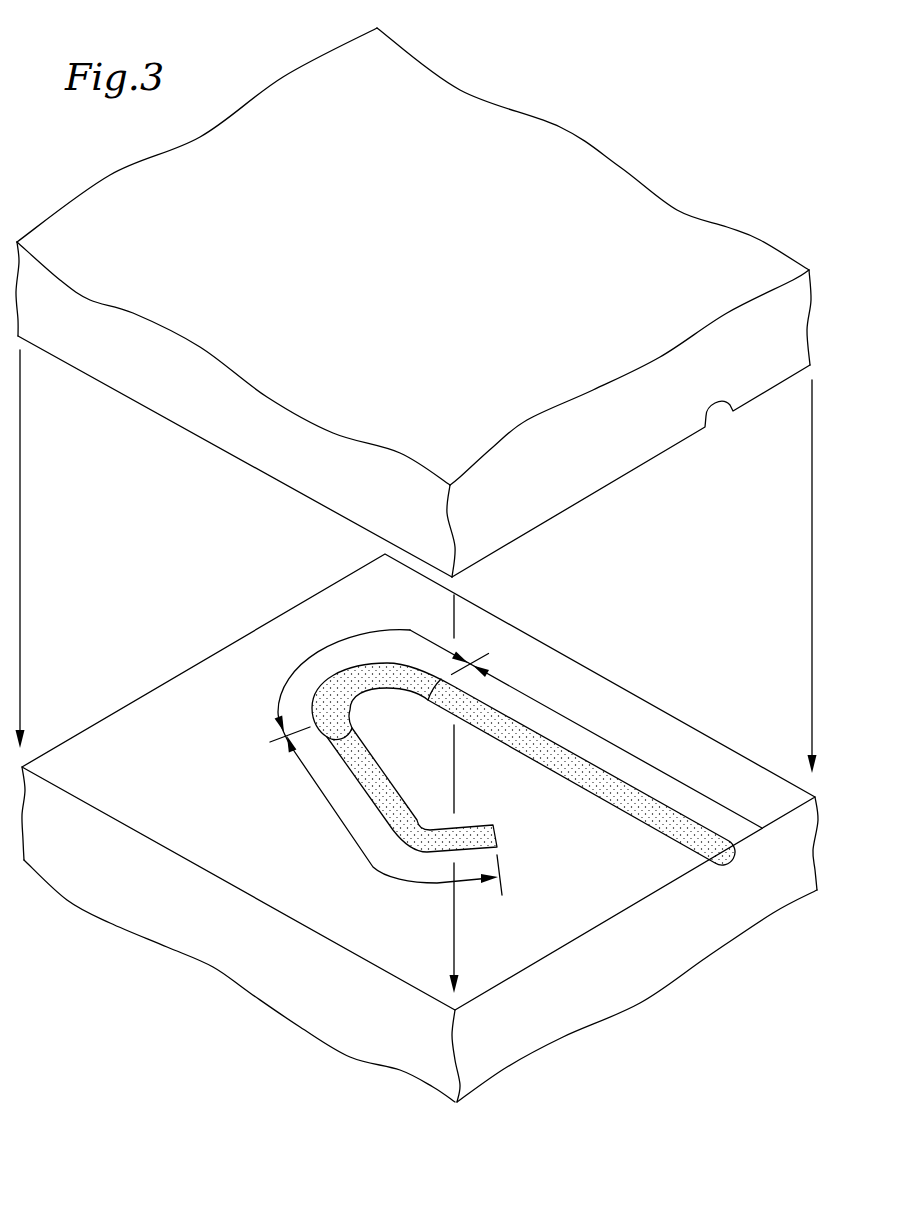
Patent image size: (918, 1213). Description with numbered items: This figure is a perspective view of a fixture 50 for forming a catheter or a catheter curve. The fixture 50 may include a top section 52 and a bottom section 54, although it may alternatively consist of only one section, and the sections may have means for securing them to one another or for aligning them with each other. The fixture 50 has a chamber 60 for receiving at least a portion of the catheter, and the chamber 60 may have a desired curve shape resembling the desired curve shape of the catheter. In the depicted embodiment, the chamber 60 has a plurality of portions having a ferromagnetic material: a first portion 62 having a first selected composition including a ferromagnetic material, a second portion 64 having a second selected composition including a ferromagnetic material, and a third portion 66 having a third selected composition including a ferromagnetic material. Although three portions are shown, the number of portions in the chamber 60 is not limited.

The fixture 50 is at (417, 565).
The top section 52 is at (213, 427).
The bottom section 54 is at (700, 730).
The chamber 60 is at (510, 721).
The first portion 62 is at (343, 827).
The second portion 64 is at (330, 640).
The third portion 66 is at (605, 735).